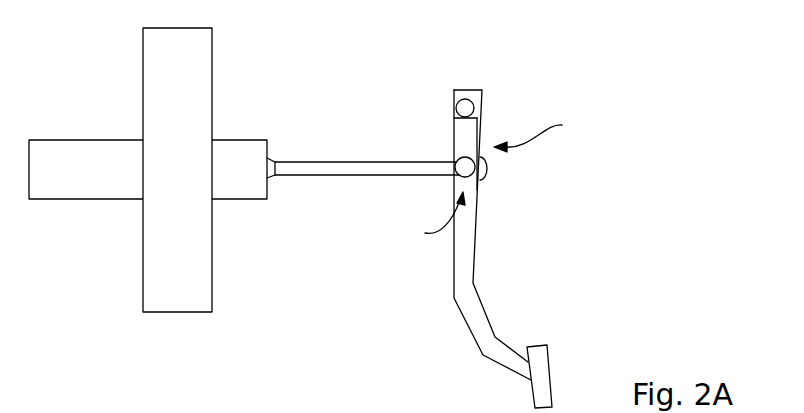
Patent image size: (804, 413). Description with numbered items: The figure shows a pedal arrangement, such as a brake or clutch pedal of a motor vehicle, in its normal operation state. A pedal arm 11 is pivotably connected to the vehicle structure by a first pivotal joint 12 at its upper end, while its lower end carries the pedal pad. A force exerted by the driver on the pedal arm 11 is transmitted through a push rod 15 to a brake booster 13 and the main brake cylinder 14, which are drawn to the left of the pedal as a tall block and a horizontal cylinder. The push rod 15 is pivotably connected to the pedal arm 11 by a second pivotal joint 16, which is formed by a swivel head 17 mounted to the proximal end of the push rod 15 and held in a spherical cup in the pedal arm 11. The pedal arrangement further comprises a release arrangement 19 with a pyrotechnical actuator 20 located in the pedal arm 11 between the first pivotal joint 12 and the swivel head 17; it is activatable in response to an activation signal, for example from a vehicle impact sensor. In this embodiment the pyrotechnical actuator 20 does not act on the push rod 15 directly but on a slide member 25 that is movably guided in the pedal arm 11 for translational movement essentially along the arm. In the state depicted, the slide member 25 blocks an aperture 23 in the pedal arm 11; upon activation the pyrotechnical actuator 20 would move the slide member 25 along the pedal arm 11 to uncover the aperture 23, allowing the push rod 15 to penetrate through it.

The pedal arm 11 is at (480, 313).
The first pivotal joint 12 is at (459, 103).
The brake booster 13 is at (143, 83).
The main brake cylinder 14 is at (81, 140).
The push rod 15 is at (350, 167).
The second pivotal joint 16 is at (431, 219).
The swivel head 17 is at (459, 176).
The release arrangement 19 is at (545, 131).
The pyrotechnical actuator 20 is at (460, 134).
The aperture 23 is at (487, 170).
The slide member 25 is at (483, 128).